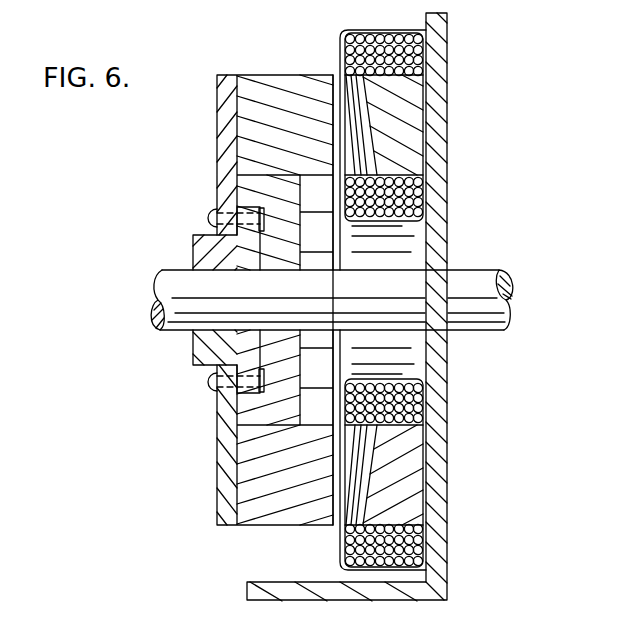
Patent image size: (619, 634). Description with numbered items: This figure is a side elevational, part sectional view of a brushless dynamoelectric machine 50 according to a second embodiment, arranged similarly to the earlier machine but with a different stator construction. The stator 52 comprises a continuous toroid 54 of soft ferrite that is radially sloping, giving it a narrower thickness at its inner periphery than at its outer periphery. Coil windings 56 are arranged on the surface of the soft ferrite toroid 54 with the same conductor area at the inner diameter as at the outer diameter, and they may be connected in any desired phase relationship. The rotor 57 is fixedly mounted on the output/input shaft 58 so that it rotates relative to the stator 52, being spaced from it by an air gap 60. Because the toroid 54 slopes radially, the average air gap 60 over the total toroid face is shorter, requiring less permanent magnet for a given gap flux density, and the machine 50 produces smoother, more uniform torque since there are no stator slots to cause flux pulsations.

The dynamoelectric machine 50 is at (538, 76).
The stator 52 is at (326, 549).
The toroid 54 is at (417, 479).
The coil windings 56 is at (410, 401).
The rotor 57 is at (266, 73).
The output/input shaft 58 is at (483, 269).
The air gap 60 is at (333, 75).